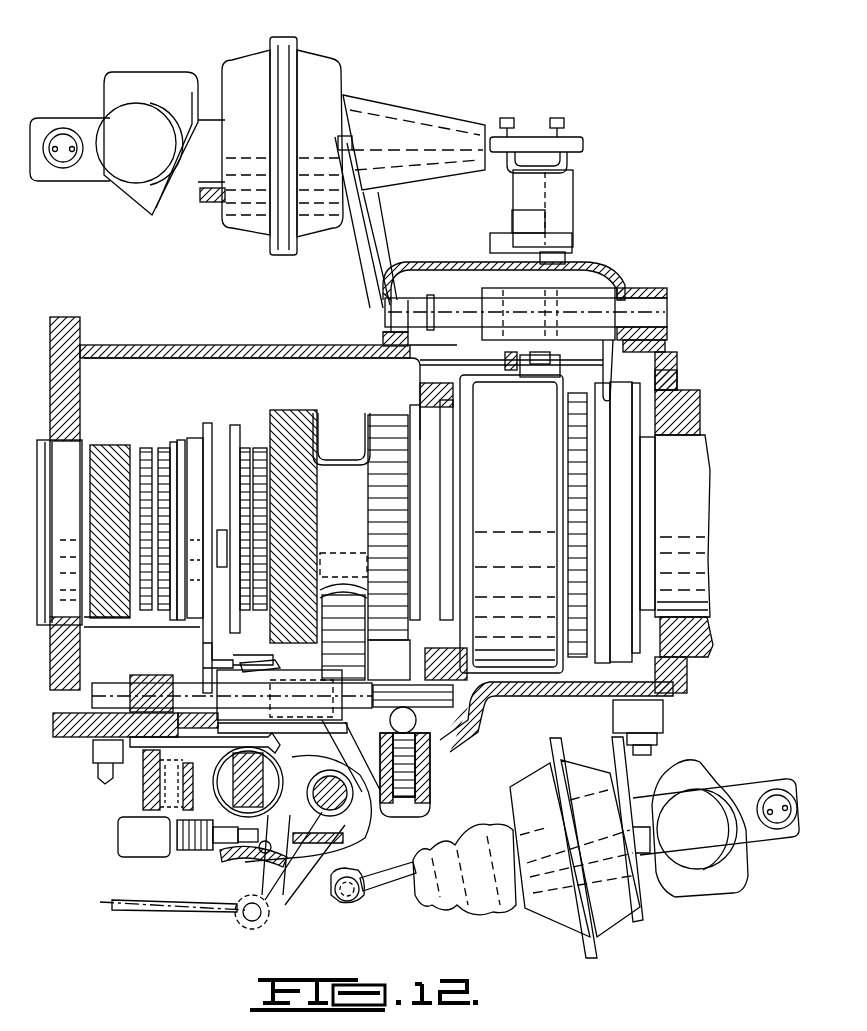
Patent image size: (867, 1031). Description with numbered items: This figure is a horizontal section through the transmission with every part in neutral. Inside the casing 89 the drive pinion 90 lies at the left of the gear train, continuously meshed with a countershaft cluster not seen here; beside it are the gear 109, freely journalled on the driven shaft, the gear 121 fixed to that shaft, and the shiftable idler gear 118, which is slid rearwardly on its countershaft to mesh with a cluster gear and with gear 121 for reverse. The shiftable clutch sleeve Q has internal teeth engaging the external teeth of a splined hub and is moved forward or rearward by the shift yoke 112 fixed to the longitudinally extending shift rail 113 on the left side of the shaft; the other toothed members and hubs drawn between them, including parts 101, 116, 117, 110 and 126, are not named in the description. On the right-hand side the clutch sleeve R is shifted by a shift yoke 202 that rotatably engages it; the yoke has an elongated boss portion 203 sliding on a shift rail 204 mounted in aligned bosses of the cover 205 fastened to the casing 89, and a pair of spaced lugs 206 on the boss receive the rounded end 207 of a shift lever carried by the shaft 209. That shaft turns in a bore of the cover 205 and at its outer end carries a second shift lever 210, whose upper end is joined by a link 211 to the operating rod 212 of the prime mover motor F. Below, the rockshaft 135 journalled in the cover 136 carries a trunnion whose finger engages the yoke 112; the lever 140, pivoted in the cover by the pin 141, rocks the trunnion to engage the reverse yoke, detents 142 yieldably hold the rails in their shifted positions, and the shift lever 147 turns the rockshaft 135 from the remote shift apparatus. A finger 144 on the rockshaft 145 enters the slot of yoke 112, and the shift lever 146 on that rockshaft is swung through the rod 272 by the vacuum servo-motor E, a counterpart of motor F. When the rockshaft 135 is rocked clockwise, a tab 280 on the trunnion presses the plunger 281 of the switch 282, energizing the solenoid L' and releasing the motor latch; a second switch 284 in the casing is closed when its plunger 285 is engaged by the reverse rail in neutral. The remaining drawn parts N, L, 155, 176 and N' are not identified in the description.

The motor socket N is at (70, 134).
The lamp housing L is at (160, 129).
The prime mover motor F is at (344, 48).
The operating rod 212 is at (496, 130).
The link 211 is at (512, 170).
The second shift lever 210 is at (562, 198).
The shaft 209 is at (552, 258).
The cover 205 is at (464, 268).
The elongated boss portion 203 is at (606, 290).
The shift rail 204 is at (668, 318).
The shift yoke 202 is at (615, 368).
The casing 89 is at (152, 345).
The drive pinion 90 is at (110, 445).
The gear 101 is at (145, 448).
The gear 116 is at (165, 448).
The shiftable clutch sleeve Q is at (206, 423).
The gear 117 is at (246, 448).
The gear 110 is at (293, 440).
The gear 109 is at (316, 432).
The gear 121 is at (370, 432).
The shiftable idler gear 118 is at (350, 555).
The drum 126 is at (530, 438).
The spaced lugs 206 is at (510, 360).
The rounded end 207 is at (542, 365).
The clutch sleeve R is at (630, 480).
The shift yoke 112 is at (220, 645).
The rockshaft 135 is at (262, 650).
The shift rail 113 is at (205, 663).
The plunger 285 is at (120, 675).
The lever 140 is at (240, 740).
The switch 284 is at (88, 752).
The pin 141 is at (160, 790).
The pivot 155 is at (253, 780).
The finger 144 is at (322, 772).
The rockshaft 145 is at (352, 800).
The detents 142 is at (425, 742).
The cover 136 is at (425, 776).
The switch 282 is at (118, 845).
The plunger 281 is at (215, 862).
The shift lever 147 is at (235, 888).
The tab 280 is at (272, 882).
The rod 176 is at (200, 913).
The shift lever 146 is at (362, 867).
The rod 272 is at (403, 897).
The servo-motor E is at (630, 931).
The solenoid L' is at (700, 822).
The motor socket N' is at (716, 827).